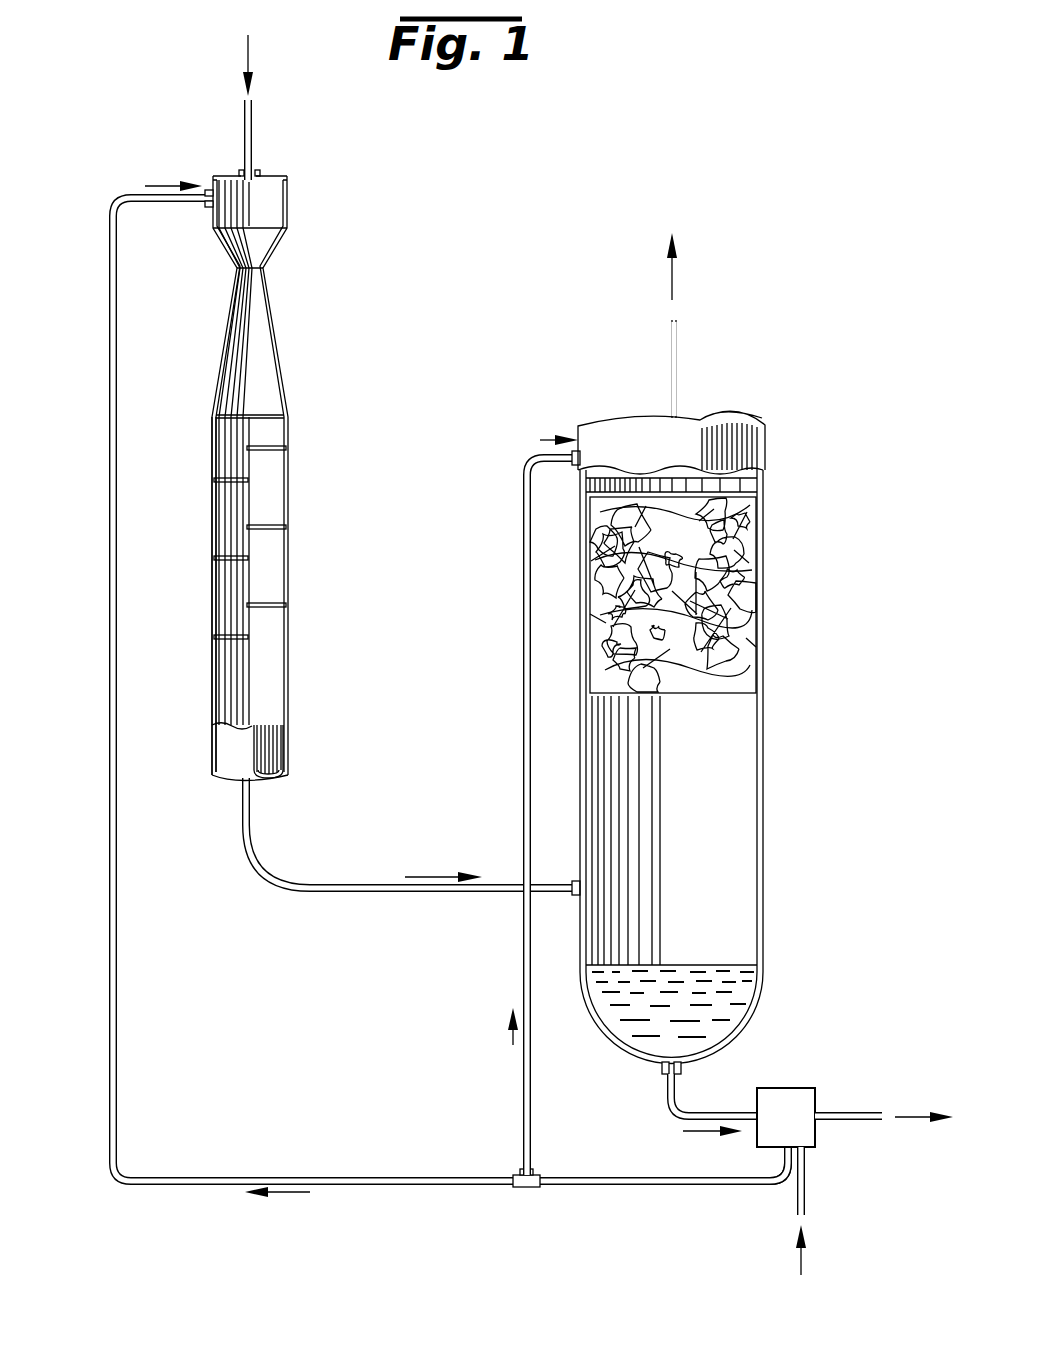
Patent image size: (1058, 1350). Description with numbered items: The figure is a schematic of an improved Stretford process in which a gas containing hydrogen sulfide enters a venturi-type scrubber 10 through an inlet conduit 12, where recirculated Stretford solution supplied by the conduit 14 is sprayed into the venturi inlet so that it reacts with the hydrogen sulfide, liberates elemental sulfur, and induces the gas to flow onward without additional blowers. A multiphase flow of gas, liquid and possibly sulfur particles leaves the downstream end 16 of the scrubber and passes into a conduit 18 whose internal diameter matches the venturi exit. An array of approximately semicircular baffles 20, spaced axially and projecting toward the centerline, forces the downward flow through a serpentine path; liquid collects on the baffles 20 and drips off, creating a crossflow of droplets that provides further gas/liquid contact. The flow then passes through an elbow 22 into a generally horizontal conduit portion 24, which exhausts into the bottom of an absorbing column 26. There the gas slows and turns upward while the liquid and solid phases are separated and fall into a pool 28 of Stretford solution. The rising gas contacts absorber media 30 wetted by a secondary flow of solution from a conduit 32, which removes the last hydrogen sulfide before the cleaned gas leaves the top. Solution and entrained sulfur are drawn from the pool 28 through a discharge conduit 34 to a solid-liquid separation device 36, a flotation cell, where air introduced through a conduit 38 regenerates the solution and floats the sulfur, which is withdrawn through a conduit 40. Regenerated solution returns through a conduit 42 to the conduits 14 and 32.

The scrubber 10 is at (226, 318).
The inlet conduit 12 is at (253, 128).
The conduit 14 is at (108, 306).
The downstream end 16 is at (240, 415).
The conduit 18 is at (210, 675).
The baffles 20 is at (262, 447).
The elbow 22 is at (263, 872).
The horizontal conduit portion 24 is at (445, 898).
The absorbing column 26 is at (765, 798).
The pool 28 is at (745, 1011).
The absorber media 30 is at (740, 581).
The conduit 32 is at (527, 553).
The discharge conduit 34 is at (704, 1110).
The solid-liquid separation device 36 is at (786, 1089).
The conduit 38 is at (808, 1193).
The conduit 40 is at (847, 1114).
The conduit 42 is at (668, 1190).